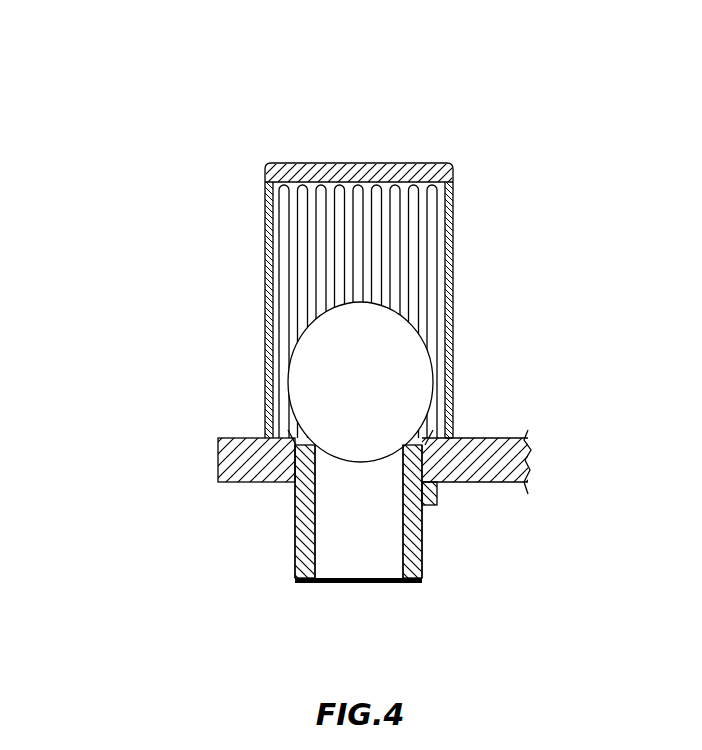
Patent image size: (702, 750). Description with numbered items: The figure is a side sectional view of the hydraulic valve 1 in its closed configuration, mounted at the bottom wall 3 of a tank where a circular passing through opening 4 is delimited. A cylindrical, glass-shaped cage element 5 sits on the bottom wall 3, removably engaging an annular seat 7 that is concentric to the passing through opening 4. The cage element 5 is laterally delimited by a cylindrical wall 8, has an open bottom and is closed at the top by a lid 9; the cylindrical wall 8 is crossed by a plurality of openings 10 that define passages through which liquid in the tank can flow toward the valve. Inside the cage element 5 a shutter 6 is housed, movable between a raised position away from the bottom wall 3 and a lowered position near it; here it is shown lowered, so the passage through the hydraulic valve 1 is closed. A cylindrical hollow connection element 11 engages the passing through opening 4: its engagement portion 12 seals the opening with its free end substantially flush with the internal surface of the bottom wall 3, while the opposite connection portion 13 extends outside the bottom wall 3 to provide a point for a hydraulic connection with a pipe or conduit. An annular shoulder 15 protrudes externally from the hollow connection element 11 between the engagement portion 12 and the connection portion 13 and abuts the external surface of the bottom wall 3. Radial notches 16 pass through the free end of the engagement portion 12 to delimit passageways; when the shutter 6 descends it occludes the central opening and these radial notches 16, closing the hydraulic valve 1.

The hydraulic valve 1 is at (88, 194).
The bottom wall 3 is at (235, 442).
The passing through opening 4 is at (315, 457).
The cage element 5 is at (220, 241).
The shutter 6 is at (369, 395).
The annular seat 7 is at (470, 445).
The cylindrical wall 8 is at (453, 255).
The lid 9 is at (398, 164).
The openings 10 is at (345, 222).
The hollow connection element 11 is at (462, 547).
The engagement portion 12 is at (425, 458).
The connection portion 13 is at (295, 548).
The shoulder 15 is at (293, 498).
The radial notches 16 is at (300, 440).